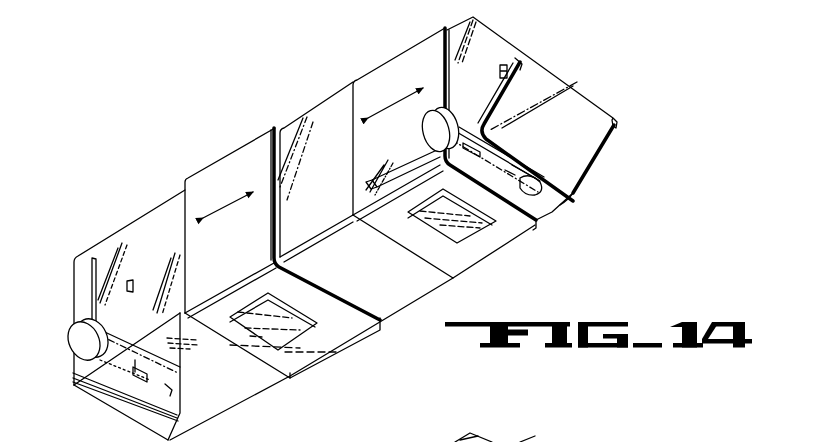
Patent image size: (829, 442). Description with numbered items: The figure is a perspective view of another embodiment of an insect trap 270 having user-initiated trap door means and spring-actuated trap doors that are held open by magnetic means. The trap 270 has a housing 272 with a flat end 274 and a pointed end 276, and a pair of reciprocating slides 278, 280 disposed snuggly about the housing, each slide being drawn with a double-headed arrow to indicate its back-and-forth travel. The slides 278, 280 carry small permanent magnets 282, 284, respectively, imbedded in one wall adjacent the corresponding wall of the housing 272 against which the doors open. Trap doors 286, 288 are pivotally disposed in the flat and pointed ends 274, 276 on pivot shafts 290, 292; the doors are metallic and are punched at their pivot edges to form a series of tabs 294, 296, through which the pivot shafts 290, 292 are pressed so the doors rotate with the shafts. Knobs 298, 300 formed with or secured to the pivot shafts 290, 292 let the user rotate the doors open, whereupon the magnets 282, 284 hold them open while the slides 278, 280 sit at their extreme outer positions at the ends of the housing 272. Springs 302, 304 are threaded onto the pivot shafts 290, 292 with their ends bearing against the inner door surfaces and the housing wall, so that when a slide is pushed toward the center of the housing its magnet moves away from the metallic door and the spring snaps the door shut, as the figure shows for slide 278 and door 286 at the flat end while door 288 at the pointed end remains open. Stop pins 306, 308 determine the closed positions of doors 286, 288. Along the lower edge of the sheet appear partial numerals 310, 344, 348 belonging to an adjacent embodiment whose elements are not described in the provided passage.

The insect trap 270 is at (289, 97).
The housing 272 is at (317, 110).
The flat end 274 is at (82, 240).
The pointed end 276 is at (608, 91).
The reciprocating slide 278 is at (227, 153).
The reciprocating slide 280 is at (407, 45).
The permanent magnet 282 is at (293, 320).
The permanent magnet 284 is at (470, 225).
The trap door 286 is at (92, 293).
The trap door 288 is at (402, 198).
The pivot shaft 290 is at (125, 370).
The pivot shaft 292 is at (550, 207).
The tabs 294 is at (172, 392).
The tabs 296 is at (540, 187).
The knob 298 is at (72, 333).
The knob 300 is at (424, 134).
The spring 302 is at (170, 378).
The spring 304 is at (490, 168).
The stop pin 306 is at (136, 281).
The stop pin 308 is at (498, 72).
The housing 310 is at (426, 434).
The roller 344 is at (495, 436).
The roller 348 is at (526, 441).